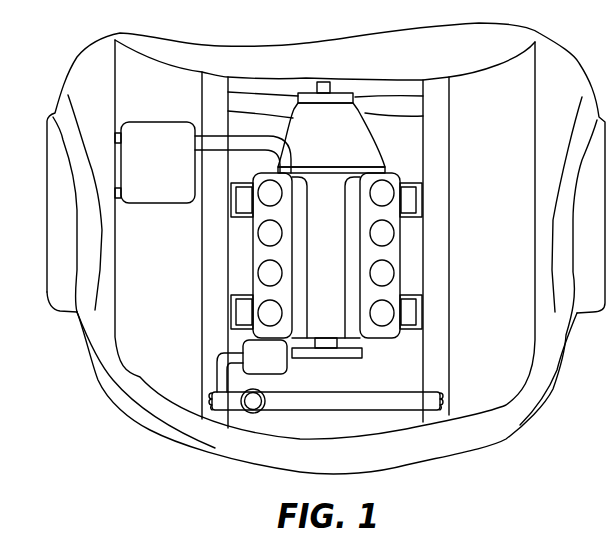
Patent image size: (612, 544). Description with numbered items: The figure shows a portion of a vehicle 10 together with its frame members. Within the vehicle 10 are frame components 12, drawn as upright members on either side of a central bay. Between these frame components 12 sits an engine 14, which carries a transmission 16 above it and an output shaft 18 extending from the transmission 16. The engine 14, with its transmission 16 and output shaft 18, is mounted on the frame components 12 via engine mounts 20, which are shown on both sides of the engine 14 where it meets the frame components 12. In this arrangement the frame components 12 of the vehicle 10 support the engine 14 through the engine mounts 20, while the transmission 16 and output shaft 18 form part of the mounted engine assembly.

The vehicle 10 is at (536, 151).
The frame components 12 is at (211, 355).
The engine 14 is at (340, 221).
The transmission 16 is at (338, 151).
The output shaft 18 is at (336, 91).
The engine mounts 20 is at (231, 197).